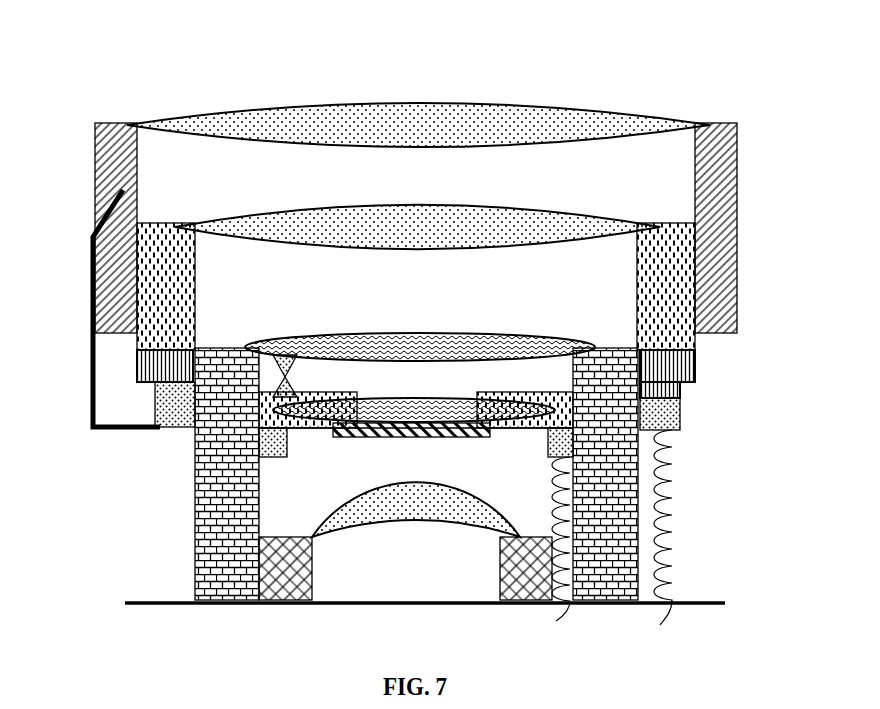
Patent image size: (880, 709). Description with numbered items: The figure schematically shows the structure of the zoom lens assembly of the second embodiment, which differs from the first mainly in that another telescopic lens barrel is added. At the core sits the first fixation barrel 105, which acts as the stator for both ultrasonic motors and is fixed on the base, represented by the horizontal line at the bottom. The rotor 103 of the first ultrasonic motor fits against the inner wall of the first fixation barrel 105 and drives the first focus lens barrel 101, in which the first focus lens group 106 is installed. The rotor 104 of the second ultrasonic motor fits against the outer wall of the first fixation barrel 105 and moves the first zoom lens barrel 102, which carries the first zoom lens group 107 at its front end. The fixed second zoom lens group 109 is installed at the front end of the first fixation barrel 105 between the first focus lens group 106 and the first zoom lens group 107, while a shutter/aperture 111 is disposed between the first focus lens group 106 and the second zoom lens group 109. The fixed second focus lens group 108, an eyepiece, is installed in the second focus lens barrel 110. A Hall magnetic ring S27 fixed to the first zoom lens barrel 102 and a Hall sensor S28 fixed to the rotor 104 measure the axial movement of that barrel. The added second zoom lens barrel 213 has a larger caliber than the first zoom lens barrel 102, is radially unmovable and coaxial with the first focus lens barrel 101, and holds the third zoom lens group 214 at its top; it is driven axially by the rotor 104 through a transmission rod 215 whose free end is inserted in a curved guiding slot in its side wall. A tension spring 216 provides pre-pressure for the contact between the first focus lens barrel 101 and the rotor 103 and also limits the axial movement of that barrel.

The first focus lens barrel 101 is at (262, 430).
The first zoom lens barrel 102 is at (680, 293).
The rotor of the first ultrasonic motor 103 is at (565, 445).
The rotor of the second ultrasonic motor 104 is at (672, 417).
The first fixation barrel 105 is at (590, 590).
The first focus lens group 106 is at (416, 412).
The first zoom lens group 107 is at (351, 215).
The second focus lens group 108 is at (400, 512).
The second zoom lens group 109 is at (417, 345).
The second focus lens barrel 110 is at (298, 593).
The shutter/aperture 111 is at (447, 437).
The second zoom lens barrel 213 is at (100, 165).
The top lens 214 is at (260, 120).
The transmission rod 215 is at (88, 362).
The tension spring 216 is at (278, 378).
The Hall magnetic ring S27 is at (680, 370).
The Hall sensor S28 is at (682, 395).